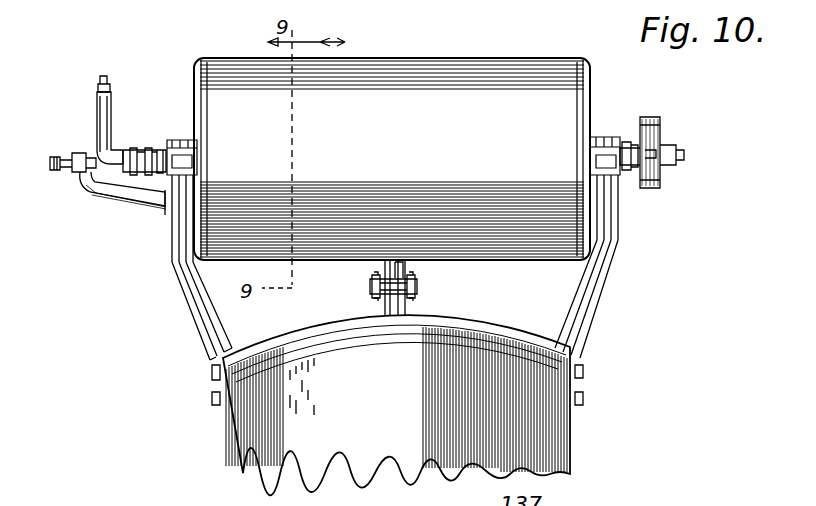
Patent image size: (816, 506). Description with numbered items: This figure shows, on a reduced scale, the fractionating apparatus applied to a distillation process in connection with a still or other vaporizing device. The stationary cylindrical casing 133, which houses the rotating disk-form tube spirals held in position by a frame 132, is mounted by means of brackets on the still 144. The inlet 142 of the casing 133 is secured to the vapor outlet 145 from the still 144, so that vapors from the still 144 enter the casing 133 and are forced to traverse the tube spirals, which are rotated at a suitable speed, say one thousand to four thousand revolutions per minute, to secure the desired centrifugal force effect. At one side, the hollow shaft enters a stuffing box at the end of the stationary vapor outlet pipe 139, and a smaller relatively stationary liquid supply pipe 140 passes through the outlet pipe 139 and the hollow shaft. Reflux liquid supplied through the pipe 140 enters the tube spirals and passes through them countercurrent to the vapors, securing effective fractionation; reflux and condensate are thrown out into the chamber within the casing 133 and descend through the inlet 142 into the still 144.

The frame 132 is at (395, 499).
The casing 133 is at (380, 142).
The outlet pipe 139 is at (97, 126).
The liquid supply pipe 140 is at (97, 97).
The inlet 142 is at (412, 275).
The still 144 is at (380, 428).
The vapor outlet 145 is at (374, 300).